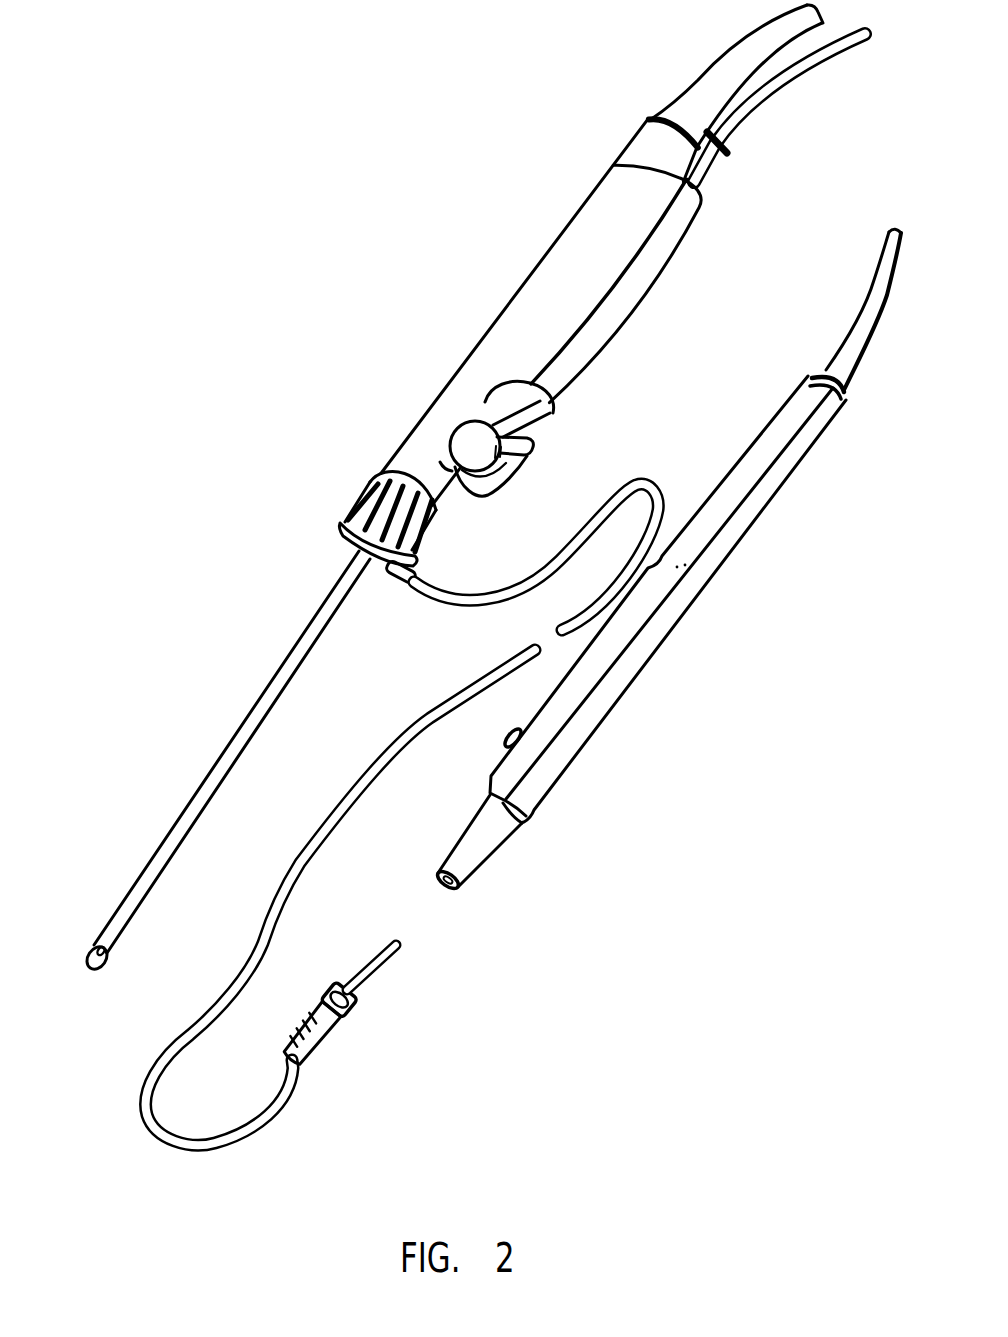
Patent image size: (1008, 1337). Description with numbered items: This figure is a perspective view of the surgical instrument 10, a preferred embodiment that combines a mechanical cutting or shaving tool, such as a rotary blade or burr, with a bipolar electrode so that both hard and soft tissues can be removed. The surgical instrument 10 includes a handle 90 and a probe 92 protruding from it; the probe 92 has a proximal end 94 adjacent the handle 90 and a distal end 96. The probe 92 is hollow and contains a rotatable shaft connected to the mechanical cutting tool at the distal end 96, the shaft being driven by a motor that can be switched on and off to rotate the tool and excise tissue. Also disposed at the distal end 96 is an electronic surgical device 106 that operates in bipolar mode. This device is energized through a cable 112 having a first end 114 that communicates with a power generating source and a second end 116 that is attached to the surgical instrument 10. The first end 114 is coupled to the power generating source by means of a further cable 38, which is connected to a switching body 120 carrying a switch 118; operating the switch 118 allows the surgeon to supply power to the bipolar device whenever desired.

The surgical instrument 10 is at (440, 340).
The cable 38 is at (889, 324).
The handle 90 is at (607, 213).
The probe 92 is at (280, 673).
The proximal end 94 is at (340, 578).
The distal end 96 is at (108, 930).
The electronic surgical device 106 is at (94, 970).
The cable 112 is at (560, 552).
The first end 114 is at (297, 1067).
The second end 116 is at (414, 588).
The switch 118 is at (510, 733).
The switching body 120 is at (807, 430).